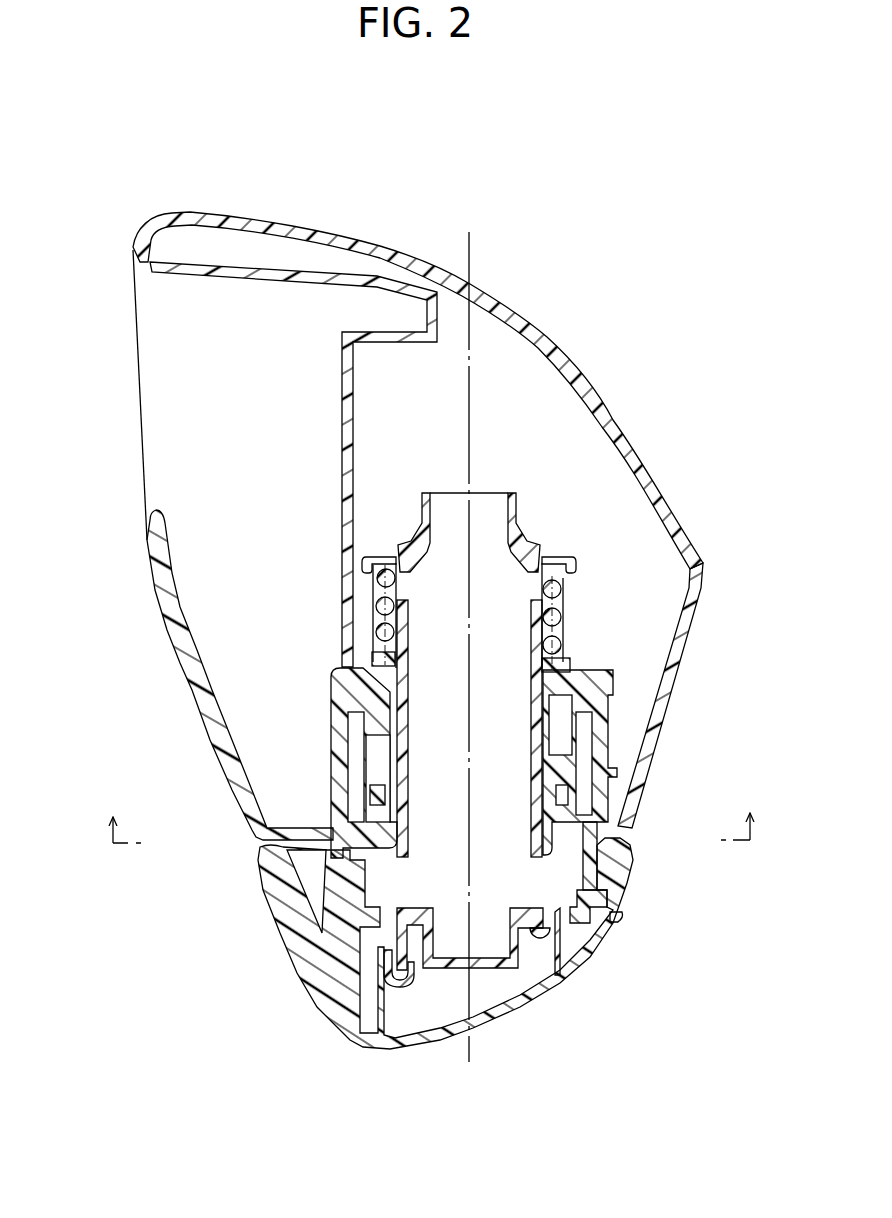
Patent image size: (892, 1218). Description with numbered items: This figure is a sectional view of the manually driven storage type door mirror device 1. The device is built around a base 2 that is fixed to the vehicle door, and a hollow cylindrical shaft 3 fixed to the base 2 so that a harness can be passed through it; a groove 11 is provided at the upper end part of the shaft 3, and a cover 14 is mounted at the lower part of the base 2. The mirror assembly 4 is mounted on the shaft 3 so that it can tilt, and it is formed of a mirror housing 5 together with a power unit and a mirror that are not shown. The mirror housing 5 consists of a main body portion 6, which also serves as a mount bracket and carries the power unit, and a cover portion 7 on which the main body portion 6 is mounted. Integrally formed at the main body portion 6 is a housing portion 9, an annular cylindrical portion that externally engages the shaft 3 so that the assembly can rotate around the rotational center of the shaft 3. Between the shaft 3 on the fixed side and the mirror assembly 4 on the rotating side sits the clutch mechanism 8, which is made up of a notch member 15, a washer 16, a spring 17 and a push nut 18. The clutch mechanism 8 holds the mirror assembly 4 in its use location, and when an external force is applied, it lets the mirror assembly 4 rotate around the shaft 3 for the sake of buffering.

The manually driven storage type door mirror device 1 is at (580, 253).
The base 2 is at (283, 933).
The shaft 3 is at (400, 728).
The mirror assembly 4 is at (132, 228).
The mirror housing 5 is at (323, 140).
The main body portion 6 is at (245, 270).
The cover portion 7 is at (221, 218).
The clutch mechanism 8 is at (558, 552).
The housing portion 9 is at (377, 763).
The groove 11 is at (537, 537).
The cover 14 is at (530, 1007).
The notch member 15 is at (393, 741).
The washer 16 is at (568, 660).
The spring 17 is at (562, 590).
The push nut 18 is at (572, 563).